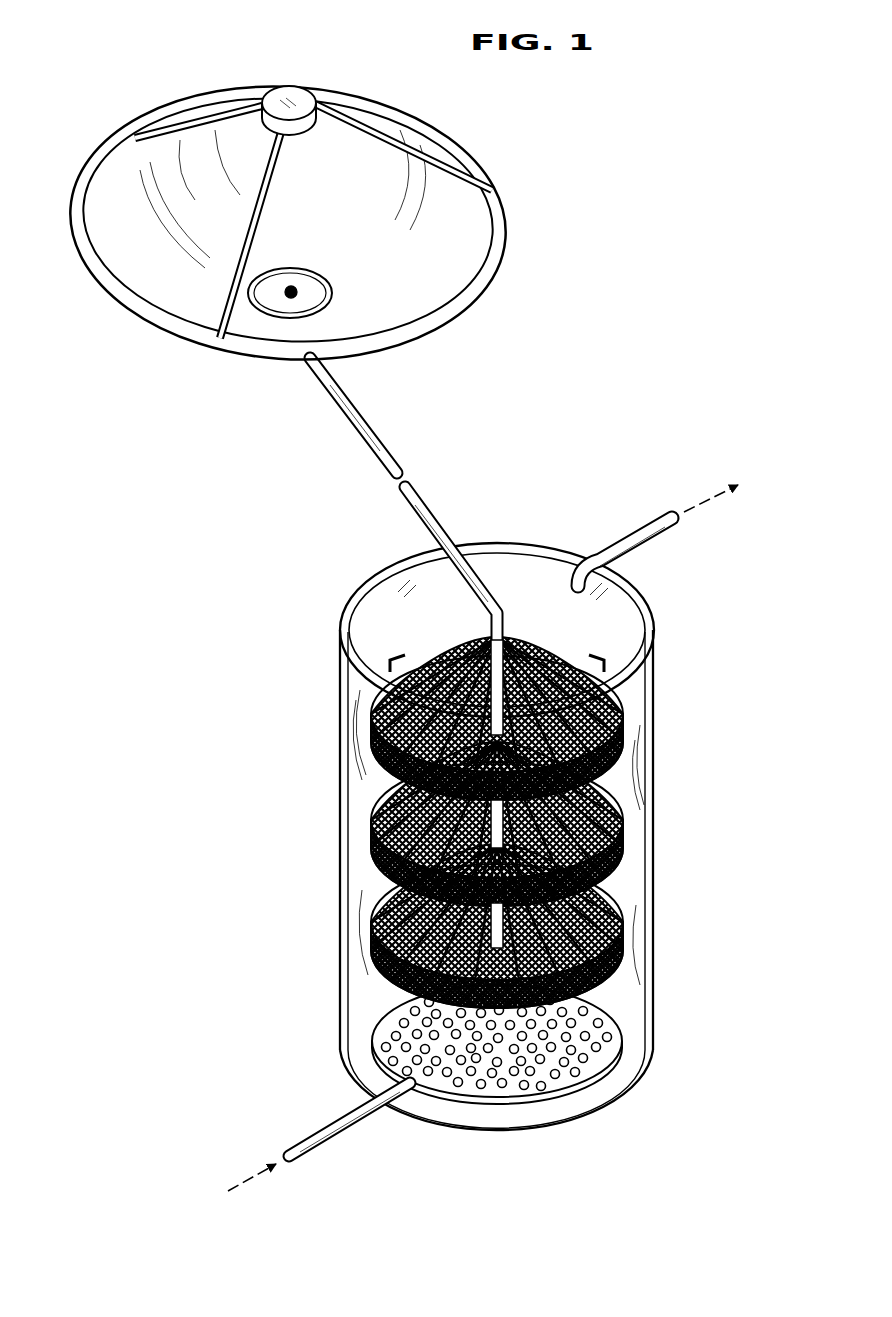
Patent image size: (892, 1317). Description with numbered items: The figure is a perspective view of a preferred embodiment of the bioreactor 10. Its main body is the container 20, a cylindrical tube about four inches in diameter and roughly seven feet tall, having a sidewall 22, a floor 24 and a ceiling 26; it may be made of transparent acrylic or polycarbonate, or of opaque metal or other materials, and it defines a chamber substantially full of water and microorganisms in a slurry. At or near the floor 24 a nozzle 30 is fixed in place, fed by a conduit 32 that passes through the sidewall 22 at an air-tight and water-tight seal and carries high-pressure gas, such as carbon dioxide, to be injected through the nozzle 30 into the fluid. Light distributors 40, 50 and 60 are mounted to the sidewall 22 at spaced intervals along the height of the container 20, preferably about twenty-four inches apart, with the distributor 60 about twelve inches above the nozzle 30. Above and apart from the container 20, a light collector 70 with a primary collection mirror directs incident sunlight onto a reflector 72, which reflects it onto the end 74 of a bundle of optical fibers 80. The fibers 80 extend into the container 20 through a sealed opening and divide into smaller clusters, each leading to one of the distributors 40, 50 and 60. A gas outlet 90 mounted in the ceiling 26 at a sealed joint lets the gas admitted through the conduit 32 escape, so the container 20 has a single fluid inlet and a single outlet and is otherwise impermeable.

The bioreactor 10 is at (650, 304).
The container 20 is at (658, 691).
The sidewall 22 is at (655, 893).
The floor 24 is at (610, 1078).
The ceiling 26 is at (370, 615).
The nozzle 30 is at (372, 1022).
The conduit 32 is at (327, 1127).
The light distributor 40 is at (370, 714).
The light distributor 50 is at (370, 826).
The light distributor 60 is at (370, 911).
The light collector 70 is at (113, 157).
The reflector 72 is at (290, 95).
The end of bundle of optical fibers 74 is at (296, 291).
The optical fibers 80 is at (412, 493).
The gas outlet 90 is at (628, 541).